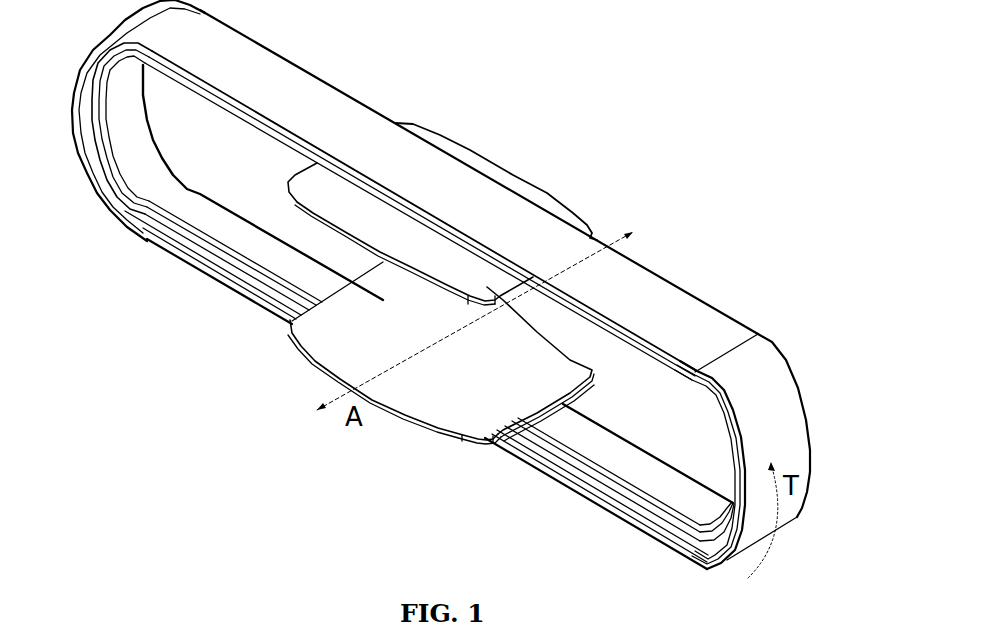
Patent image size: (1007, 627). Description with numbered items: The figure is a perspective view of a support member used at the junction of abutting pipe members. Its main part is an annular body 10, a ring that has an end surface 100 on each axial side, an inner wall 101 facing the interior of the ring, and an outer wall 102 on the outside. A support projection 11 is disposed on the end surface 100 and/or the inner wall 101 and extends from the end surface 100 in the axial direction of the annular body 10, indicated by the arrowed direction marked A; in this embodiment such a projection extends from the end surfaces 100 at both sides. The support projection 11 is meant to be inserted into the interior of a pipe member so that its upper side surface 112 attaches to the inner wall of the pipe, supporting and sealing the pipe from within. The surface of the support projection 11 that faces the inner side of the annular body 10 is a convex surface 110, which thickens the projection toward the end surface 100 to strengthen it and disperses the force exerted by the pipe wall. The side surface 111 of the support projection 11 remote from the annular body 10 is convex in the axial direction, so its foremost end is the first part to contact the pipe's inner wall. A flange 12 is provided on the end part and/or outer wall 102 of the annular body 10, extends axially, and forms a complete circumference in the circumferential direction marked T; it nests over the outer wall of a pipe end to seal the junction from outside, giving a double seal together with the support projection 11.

The annular body 10 is at (296, 77).
The end surface 100 is at (235, 268).
The inner wall 101 is at (172, 200).
The outer wall 102 is at (357, 110).
The support projection 11 is at (449, 295).
The convex surface 110 is at (475, 420).
The side surface 111 is at (466, 140).
The upper side surface 112 is at (562, 205).
The flange 12 is at (250, 307).